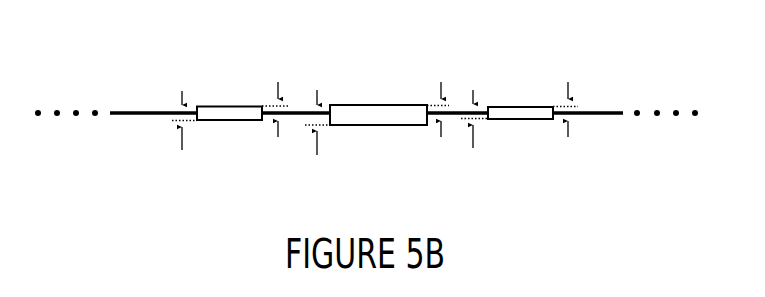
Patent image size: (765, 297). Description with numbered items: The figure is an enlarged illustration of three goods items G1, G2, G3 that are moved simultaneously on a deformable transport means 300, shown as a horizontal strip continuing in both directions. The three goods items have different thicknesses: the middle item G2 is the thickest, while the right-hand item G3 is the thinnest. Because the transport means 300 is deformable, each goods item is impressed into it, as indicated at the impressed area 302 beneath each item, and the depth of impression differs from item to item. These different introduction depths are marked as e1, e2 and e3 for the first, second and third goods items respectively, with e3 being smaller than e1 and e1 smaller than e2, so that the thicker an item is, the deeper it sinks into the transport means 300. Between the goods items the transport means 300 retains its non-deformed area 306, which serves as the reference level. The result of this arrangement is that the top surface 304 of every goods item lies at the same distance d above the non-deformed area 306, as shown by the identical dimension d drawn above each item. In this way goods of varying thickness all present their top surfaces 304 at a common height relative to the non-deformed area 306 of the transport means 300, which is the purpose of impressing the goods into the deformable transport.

The transport means 300 is at (603, 112).
The impressed area 302 is at (223, 121).
The top surface 304 is at (208, 105).
The non-deformed area 306 is at (288, 108).
The goods item G1 is at (232, 112).
The goods item G2 is at (365, 115).
The goods item G3 is at (518, 113).
The distance d is at (286, 107).
The introduction depth e1 is at (172, 122).
The introduction depth e2 is at (306, 127).
The introduction depth e3 is at (463, 121).